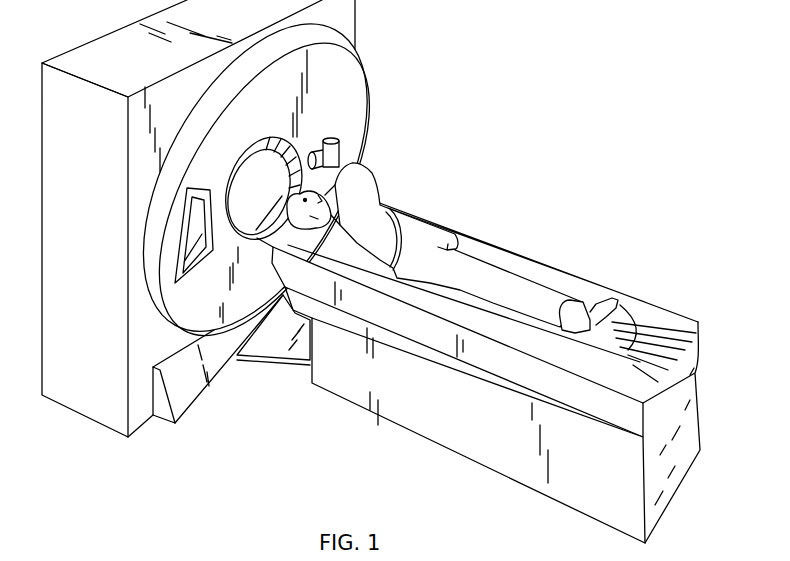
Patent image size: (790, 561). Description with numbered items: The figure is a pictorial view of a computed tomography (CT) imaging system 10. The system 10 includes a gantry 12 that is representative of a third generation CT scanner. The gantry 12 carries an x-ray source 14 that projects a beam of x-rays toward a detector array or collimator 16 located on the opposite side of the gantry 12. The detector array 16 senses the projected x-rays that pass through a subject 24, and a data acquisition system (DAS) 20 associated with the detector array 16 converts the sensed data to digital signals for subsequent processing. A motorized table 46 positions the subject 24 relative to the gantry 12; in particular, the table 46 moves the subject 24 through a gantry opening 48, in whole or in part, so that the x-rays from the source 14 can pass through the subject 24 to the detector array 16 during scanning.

The computed tomography (CT) imaging system 10 is at (468, 83).
The gantry 12 is at (354, 117).
The x-ray source 14 is at (358, 153).
The detector array 16 is at (197, 263).
The data acquisition system (DAS) 20 is at (200, 192).
The subject 24 is at (392, 218).
The motorized table 46 is at (470, 445).
The gantry opening 48 is at (255, 180).